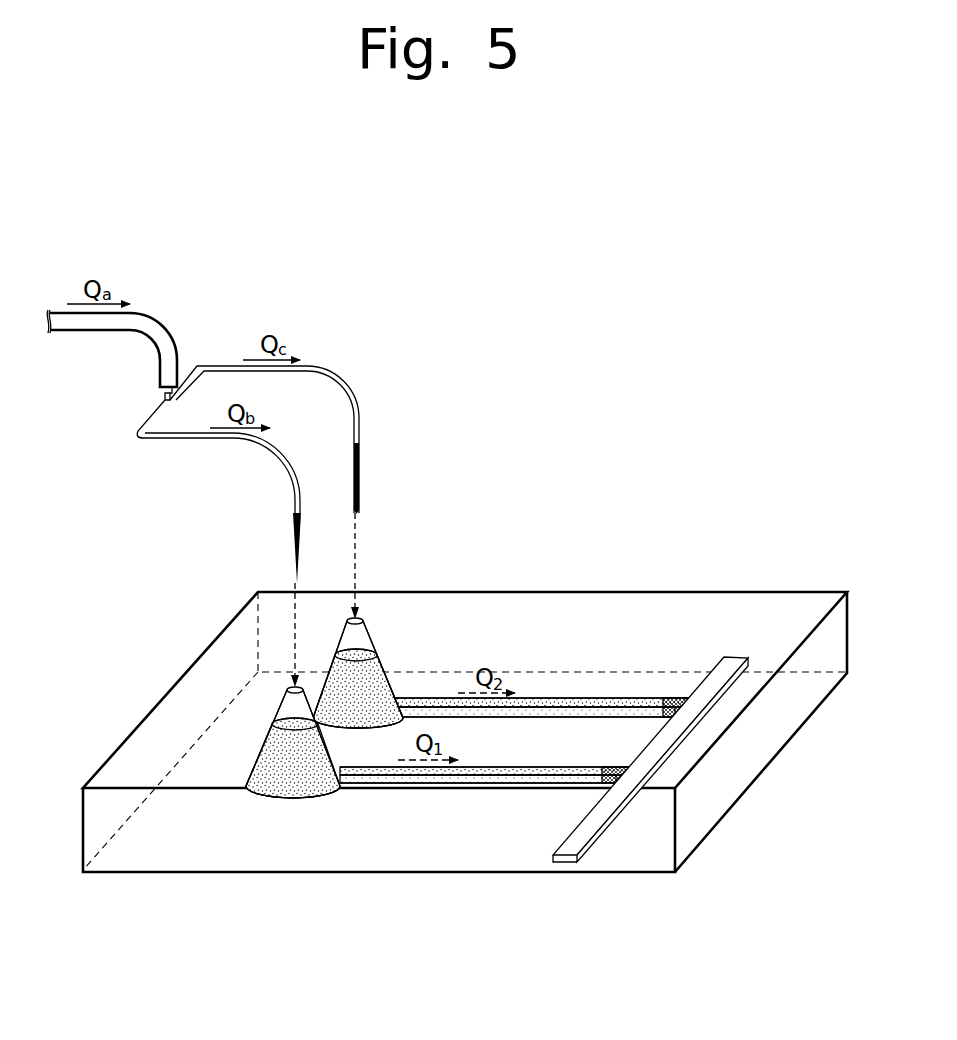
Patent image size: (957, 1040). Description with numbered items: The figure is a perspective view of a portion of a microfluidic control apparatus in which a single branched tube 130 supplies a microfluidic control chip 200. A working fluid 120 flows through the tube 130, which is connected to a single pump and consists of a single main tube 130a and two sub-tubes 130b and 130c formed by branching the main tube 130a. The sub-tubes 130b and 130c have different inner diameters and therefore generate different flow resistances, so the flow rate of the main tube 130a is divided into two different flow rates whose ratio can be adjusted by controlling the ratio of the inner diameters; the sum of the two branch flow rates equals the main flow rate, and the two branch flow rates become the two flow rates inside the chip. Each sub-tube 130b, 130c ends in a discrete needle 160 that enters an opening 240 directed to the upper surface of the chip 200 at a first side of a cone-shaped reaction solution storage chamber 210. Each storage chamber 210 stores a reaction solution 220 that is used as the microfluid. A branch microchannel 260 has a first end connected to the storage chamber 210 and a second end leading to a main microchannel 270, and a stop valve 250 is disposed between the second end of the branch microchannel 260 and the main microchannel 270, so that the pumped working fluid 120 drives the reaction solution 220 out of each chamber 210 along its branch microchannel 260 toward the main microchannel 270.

The working fluid 120 is at (92, 322).
The tube 130 is at (254, 398).
The main tube 130a is at (162, 325).
The sub-tube 130b is at (245, 420).
The sub-tube 130c is at (339, 386).
The needle 160 is at (293, 540).
The microfluidic control chip 200 is at (747, 590).
The reaction solution storage chamber 210 is at (244, 763).
The reaction solution 220 is at (270, 773).
The opening 240 is at (295, 676).
The stop valve 250 is at (515, 709).
The branch microchannel 260 is at (565, 699).
The main microchannel 270 is at (717, 677).